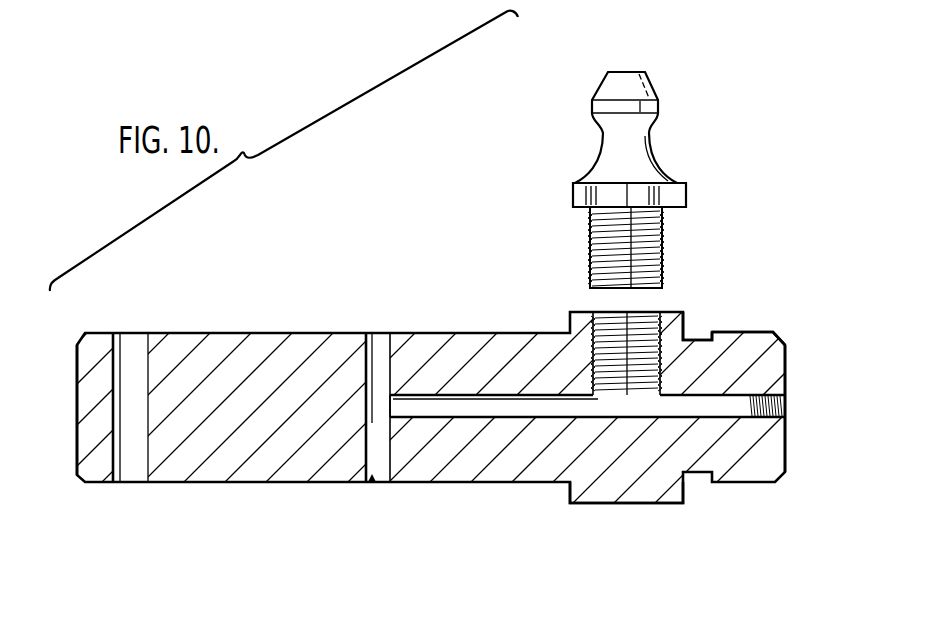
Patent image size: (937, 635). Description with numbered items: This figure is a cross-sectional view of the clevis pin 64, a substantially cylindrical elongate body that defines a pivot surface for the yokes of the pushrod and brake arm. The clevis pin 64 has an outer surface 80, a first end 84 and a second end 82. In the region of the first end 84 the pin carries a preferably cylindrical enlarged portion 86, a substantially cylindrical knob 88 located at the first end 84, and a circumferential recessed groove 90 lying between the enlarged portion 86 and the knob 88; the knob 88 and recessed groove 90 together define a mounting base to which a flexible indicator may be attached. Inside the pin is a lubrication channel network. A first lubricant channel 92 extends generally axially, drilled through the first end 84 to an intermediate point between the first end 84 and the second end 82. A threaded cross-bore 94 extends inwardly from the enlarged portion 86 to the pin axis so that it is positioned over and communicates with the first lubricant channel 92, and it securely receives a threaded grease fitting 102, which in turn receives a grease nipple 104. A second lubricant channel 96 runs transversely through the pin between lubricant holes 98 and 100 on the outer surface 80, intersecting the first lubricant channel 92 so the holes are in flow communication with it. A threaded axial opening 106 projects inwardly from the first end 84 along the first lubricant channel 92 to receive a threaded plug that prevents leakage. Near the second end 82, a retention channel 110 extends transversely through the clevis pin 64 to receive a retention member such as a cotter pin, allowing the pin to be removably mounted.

The clevis pin 64 is at (282, 507).
The outer surface 80 is at (203, 483).
The second end 82 is at (77, 395).
The first end 84 is at (786, 438).
The enlarged portion 86 is at (652, 503).
The knob 88 is at (747, 332).
The recessed groove 90 is at (693, 340).
The first lubricant channel 92 is at (505, 412).
The threaded cross-bore 94 is at (600, 314).
The second lubricant channel 96 is at (377, 483).
The lubricant hole 98 is at (378, 338).
The lubricant hole 100 is at (388, 483).
The grease fitting 102 is at (658, 243).
The grease nipple 104 is at (650, 83).
The threaded axial opening 106 is at (783, 405).
The retention channel 110 is at (133, 350).